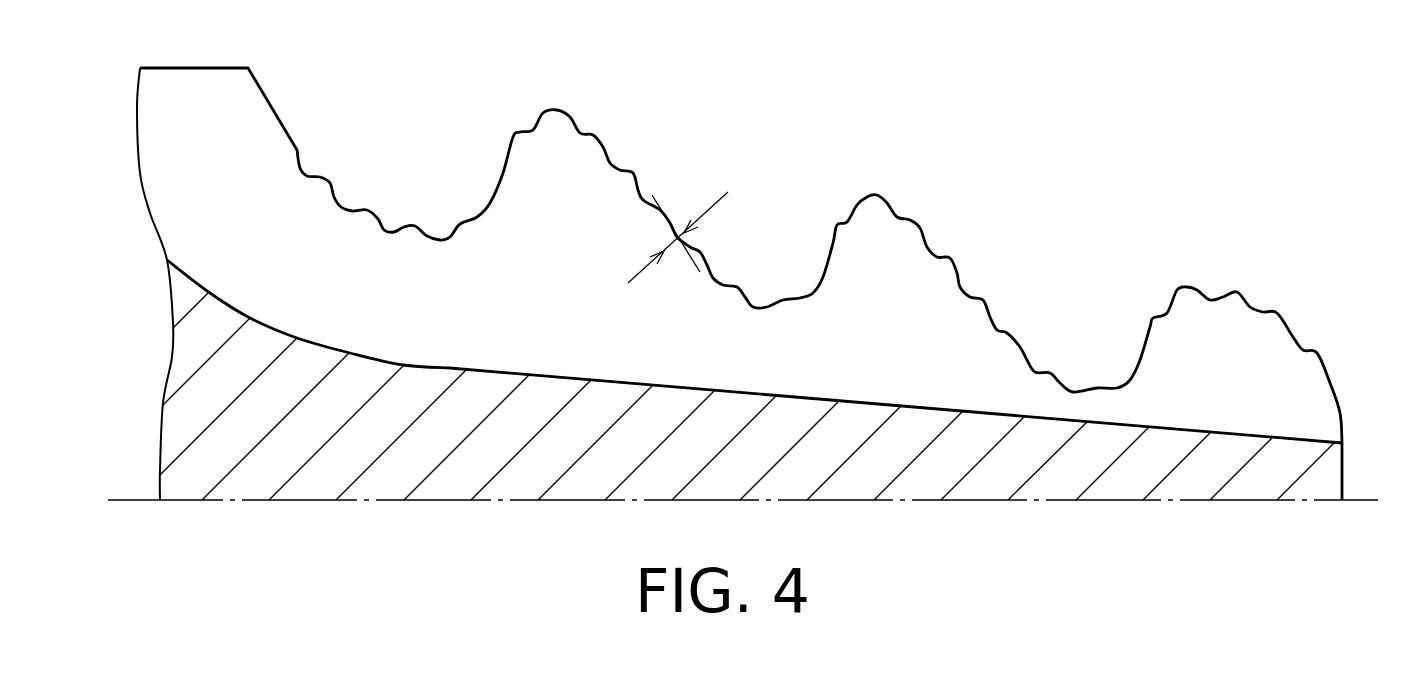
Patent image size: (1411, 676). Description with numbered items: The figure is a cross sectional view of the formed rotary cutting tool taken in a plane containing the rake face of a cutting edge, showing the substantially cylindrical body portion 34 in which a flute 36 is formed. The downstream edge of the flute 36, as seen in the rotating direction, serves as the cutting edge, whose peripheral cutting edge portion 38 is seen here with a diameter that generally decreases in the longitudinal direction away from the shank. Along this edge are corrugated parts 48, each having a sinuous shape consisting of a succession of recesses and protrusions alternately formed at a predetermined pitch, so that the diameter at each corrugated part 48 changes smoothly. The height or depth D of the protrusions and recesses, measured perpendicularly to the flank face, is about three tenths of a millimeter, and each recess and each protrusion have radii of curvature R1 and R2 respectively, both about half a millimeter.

The body portion 34 is at (758, 262).
The flute 36 is at (1268, 432).
The peripheral cutting edge portion 38 is at (741, 262).
The corrugated part 48 is at (372, 187).
The radius of curvature of recess R1 is at (613, 163).
The radius of curvature of protrusion R2 is at (635, 178).
The height or depth of protrusions and recesses D is at (685, 237).